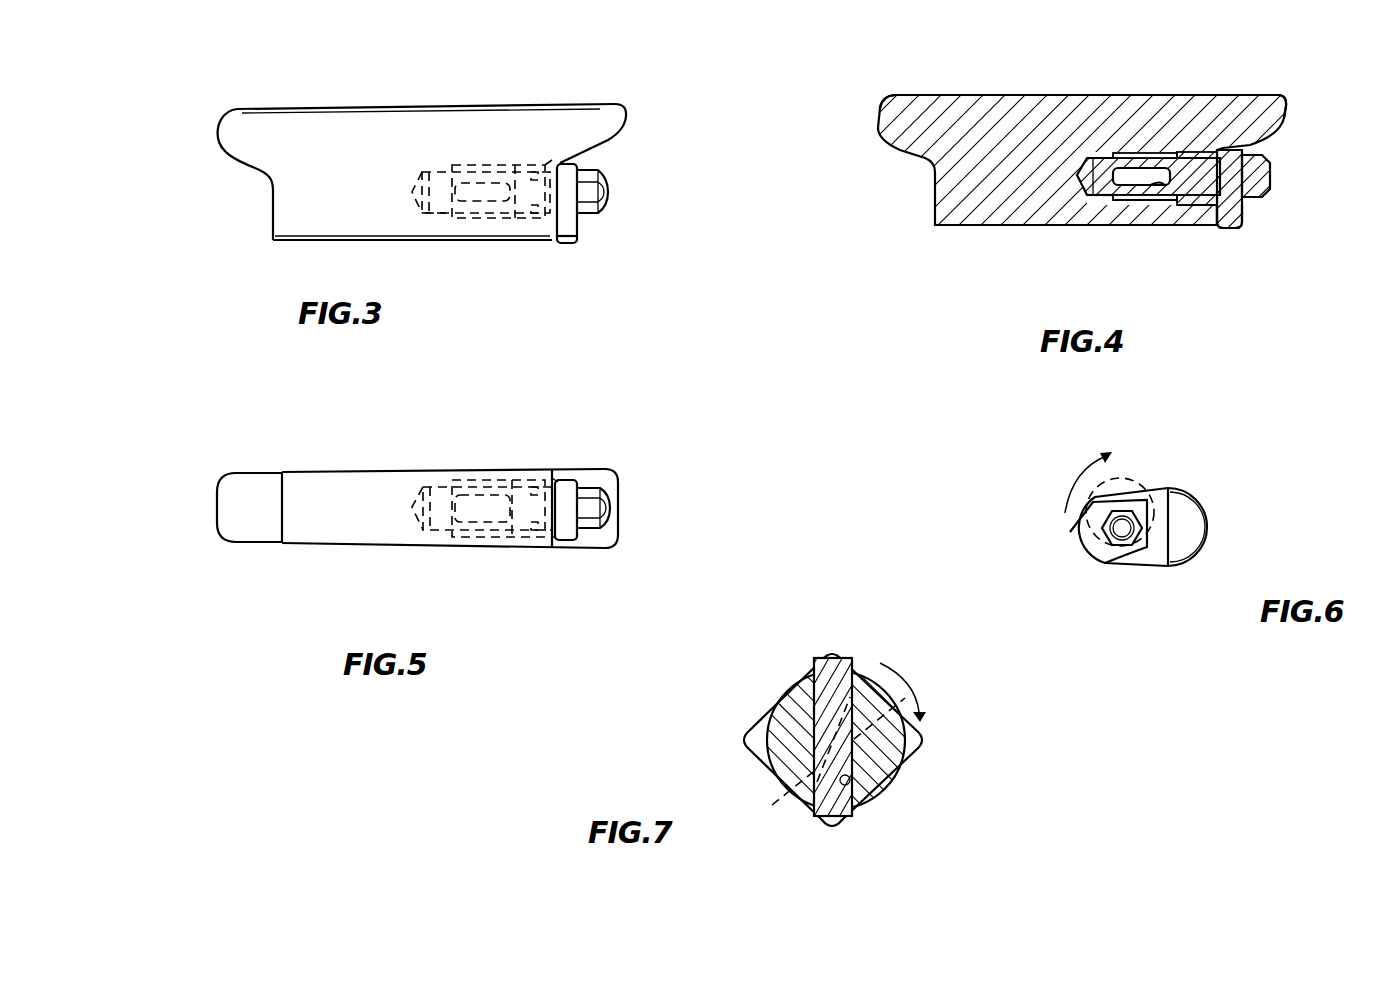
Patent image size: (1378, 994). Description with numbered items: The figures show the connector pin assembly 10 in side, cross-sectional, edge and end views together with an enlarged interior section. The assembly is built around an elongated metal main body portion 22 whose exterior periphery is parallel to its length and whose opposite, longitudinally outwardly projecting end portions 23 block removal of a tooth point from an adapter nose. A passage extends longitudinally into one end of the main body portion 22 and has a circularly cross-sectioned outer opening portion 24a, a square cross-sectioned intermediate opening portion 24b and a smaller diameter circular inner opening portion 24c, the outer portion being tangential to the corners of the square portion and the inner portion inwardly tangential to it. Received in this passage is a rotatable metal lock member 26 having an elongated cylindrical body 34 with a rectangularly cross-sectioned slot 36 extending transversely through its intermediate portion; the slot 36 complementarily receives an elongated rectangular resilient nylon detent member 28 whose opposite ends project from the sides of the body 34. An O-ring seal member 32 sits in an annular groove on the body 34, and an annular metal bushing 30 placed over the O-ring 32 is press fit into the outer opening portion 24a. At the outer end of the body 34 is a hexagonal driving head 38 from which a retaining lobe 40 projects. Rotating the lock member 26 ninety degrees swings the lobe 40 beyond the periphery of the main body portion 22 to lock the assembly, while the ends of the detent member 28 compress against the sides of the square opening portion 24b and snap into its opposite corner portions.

In FIG. 3, the connector pin assembly 10 is at (423, 170).
In FIG. 4, the connector pin assembly 10 is at (1093, 214).
In FIG. 5, the connector pin assembly 10 is at (443, 506).
In FIG. 6, the connector pin assembly 10 is at (1165, 530).
In FIG. 3, the main body portion 22 is at (563, 108).
In FIG. 4, the main body portion 22 is at (993, 100).
In FIG. 5, the main body portion 22 is at (372, 548).
In FIG. 6, the main body portion 22 is at (1208, 508).
In FIG. 3, the end portions 23 is at (235, 118).
In FIG. 4, the end portions 23 is at (890, 105).
In FIG. 3, the outer opening portion 24a is at (560, 160).
In FIG. 4, the outer opening portion 24a is at (1198, 228).
In FIG. 3, the intermediate opening portion 24b is at (478, 165).
In FIG. 4, the intermediate opening portion 24b is at (1158, 200).
In FIG. 5, the intermediate opening portion 24b is at (497, 535).
In FIG. 7, the intermediate opening portion 24b is at (918, 750).
In FIG. 3, the inner opening portion 24c is at (440, 215).
In FIG. 4, the inner opening portion 24c is at (1107, 225).
In FIG. 4, the lock member 26 is at (1103, 162).
In FIG. 5, the lock member 26 is at (485, 503).
In FIG. 3, the detent member 28 is at (490, 200).
In FIG. 4, the detent member 28 is at (1145, 172).
In FIG. 7, the detent member 28 is at (833, 675).
In FIG. 3, the bushing 30 is at (553, 162).
In FIG. 4, the bushing 30 is at (1197, 148).
In FIG. 3, the O-ring seal member 32 is at (548, 218).
In FIG. 4, the O-ring seal member 32 is at (1232, 168).
In FIG. 7, the cylindrical body 34 is at (780, 722).
In FIG. 4, the slot 36 is at (1160, 188).
In FIG. 7, the slot 36 is at (862, 790).
In FIG. 3, the driving head 38 is at (608, 195).
In FIG. 4, the driving head 38 is at (1272, 185).
In FIG. 5, the driving head 38 is at (595, 498).
In FIG. 6, the driving head 38 is at (1125, 540).
In FIG. 3, the retaining lobe 40 is at (572, 243).
In FIG. 4, the retaining lobe 40 is at (1242, 212).
In FIG. 6, the retaining lobe 40 is at (1143, 478).